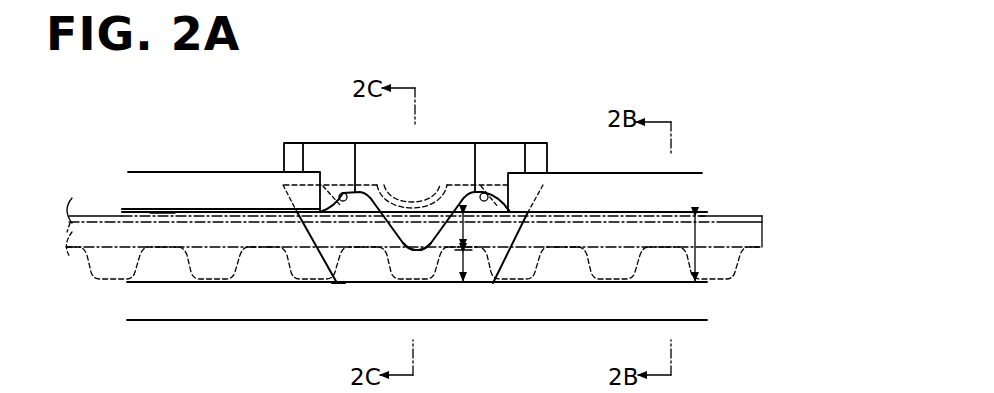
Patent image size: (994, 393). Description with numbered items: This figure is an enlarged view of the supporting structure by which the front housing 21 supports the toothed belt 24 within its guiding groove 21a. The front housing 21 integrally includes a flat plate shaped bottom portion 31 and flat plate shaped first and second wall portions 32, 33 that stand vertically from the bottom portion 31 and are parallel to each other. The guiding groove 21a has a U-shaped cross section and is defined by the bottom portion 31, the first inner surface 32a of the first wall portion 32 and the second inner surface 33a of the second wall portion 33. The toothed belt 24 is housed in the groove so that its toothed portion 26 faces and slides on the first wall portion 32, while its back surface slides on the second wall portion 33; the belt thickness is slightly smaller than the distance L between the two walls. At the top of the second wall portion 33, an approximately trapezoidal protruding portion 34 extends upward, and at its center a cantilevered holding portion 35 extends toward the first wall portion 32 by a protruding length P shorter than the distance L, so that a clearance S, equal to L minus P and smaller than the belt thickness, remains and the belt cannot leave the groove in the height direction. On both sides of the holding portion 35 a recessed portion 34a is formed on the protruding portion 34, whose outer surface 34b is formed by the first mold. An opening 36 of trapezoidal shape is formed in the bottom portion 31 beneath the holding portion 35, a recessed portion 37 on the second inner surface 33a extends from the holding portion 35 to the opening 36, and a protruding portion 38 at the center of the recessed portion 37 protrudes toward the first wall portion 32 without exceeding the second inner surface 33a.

The front housing 21 is at (813, 137).
The guiding groove 21a is at (764, 162).
The toothed belt 24 is at (728, 213).
The toothed portion 26 is at (578, 273).
The bottom portion 31 is at (593, 165).
The first wall portion 32 is at (236, 312).
The first inner surface 32a is at (155, 272).
The second wall portion 33 is at (222, 182).
The second inner surface 33a is at (170, 215).
The protruding portion 34 is at (470, 143).
The recessed portion 34a is at (340, 196).
The outer surface 34b is at (437, 157).
The holding portion 35 is at (408, 238).
The opening 36 is at (343, 272).
The recessed portion 37 is at (296, 210).
The protruding portion 38 is at (373, 185).
The protruding length P is at (467, 233).
The clearance S is at (454, 287).
The distance L is at (698, 262).